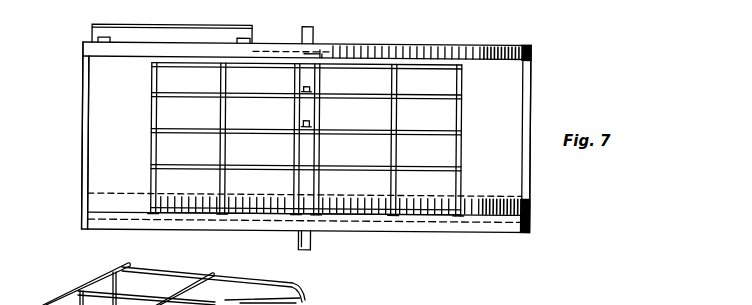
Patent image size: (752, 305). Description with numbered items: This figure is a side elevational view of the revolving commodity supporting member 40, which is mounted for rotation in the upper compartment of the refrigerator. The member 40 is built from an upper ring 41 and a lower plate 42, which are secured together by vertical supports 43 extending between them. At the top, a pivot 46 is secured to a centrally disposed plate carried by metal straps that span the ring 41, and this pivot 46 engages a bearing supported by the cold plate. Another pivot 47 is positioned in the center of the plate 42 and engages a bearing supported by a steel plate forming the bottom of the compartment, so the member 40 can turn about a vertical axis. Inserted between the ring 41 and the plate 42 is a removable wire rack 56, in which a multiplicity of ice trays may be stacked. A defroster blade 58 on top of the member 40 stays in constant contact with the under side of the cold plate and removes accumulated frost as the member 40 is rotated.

The commodity supporting member 40 is at (490, 47).
The ring 41 is at (425, 45).
The plate 42 is at (481, 229).
The vertical supports 43 is at (84, 103).
The pivot 46 is at (313, 40).
The pivot 47 is at (314, 240).
The wire rack 56 is at (463, 110).
The defroster blade 58 is at (183, 35).